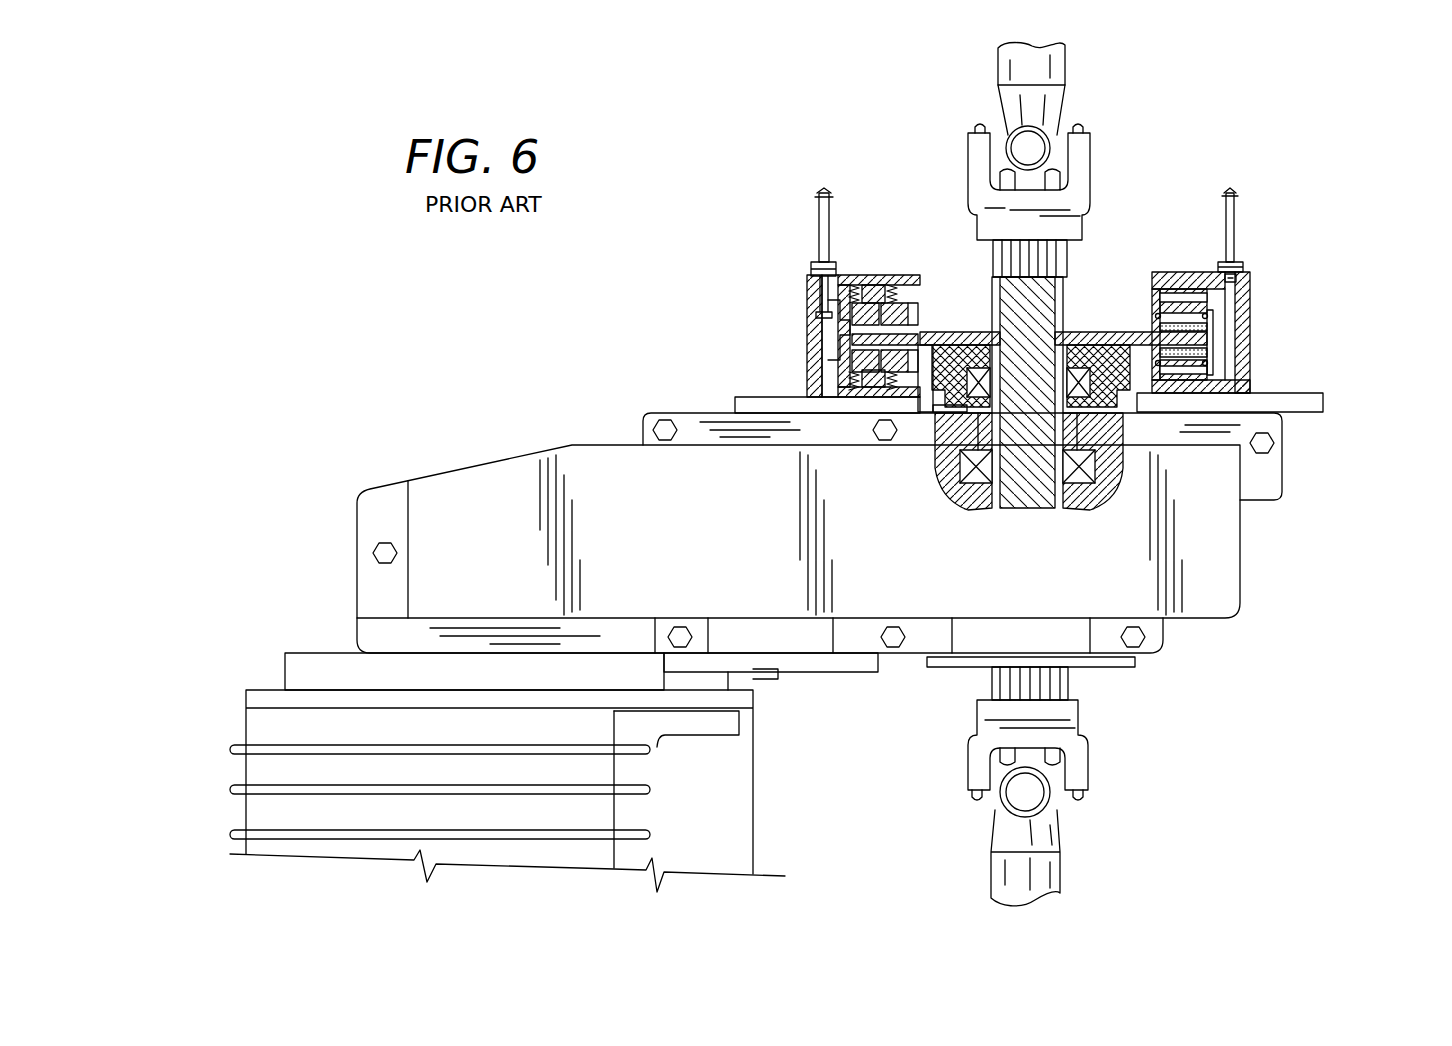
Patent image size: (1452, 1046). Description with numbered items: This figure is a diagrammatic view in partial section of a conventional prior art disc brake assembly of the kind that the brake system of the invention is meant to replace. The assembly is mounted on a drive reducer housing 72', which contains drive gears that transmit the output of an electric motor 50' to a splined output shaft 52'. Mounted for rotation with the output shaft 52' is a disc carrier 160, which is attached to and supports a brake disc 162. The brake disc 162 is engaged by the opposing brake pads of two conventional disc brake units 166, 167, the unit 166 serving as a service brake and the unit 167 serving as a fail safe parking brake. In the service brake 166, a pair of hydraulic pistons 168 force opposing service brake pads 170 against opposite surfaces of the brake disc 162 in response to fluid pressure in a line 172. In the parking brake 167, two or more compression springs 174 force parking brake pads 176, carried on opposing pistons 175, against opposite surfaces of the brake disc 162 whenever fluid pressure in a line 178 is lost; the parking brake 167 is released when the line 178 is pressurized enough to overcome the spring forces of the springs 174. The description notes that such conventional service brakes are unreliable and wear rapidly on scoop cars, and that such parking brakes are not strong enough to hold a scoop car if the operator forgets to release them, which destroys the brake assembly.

The electric motor 50' is at (682, 727).
The splined output shaft 52' is at (1054, 474).
The drive reducer housing 72' is at (819, 533).
The disc carrier 160 is at (1098, 345).
The brake disc 162 is at (1072, 332).
The disc brake unit (service brake) 166 is at (1415, 244).
The disc brake unit (fail safe parking brake) 167 is at (750, 245).
The hydraulic pistons 168 is at (1180, 300).
The service brake pads 170 is at (1158, 325).
The fluid pressure line 172 is at (1236, 218).
The compression springs 174 is at (870, 283).
The opposing pistons 175 is at (878, 290).
The parking brake pads 176 is at (913, 337).
The fluid pressure line 178 is at (832, 210).